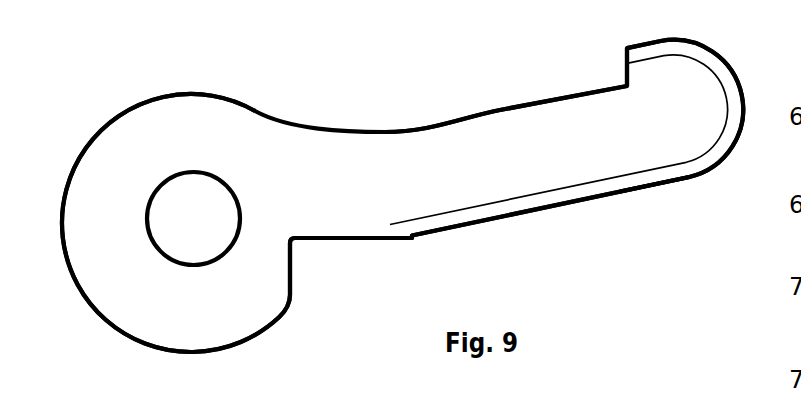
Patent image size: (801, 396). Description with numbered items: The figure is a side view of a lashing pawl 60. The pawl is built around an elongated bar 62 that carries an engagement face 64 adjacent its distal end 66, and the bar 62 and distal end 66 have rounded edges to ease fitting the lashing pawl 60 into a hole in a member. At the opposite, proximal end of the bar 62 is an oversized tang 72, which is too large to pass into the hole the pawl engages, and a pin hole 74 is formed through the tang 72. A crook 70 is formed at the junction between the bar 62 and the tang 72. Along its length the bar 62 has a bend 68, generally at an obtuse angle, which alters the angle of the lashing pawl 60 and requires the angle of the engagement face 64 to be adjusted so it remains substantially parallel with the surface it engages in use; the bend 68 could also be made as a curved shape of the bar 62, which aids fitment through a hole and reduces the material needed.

The lashing pawl 60 is at (349, 92).
The elongated bar 62 is at (507, 108).
The engagement face 64 is at (627, 61).
The distal end 66 is at (739, 80).
The bend 68 is at (412, 243).
The crook 70 is at (296, 241).
The tang 72 is at (142, 343).
The pin hole 74 is at (225, 187).